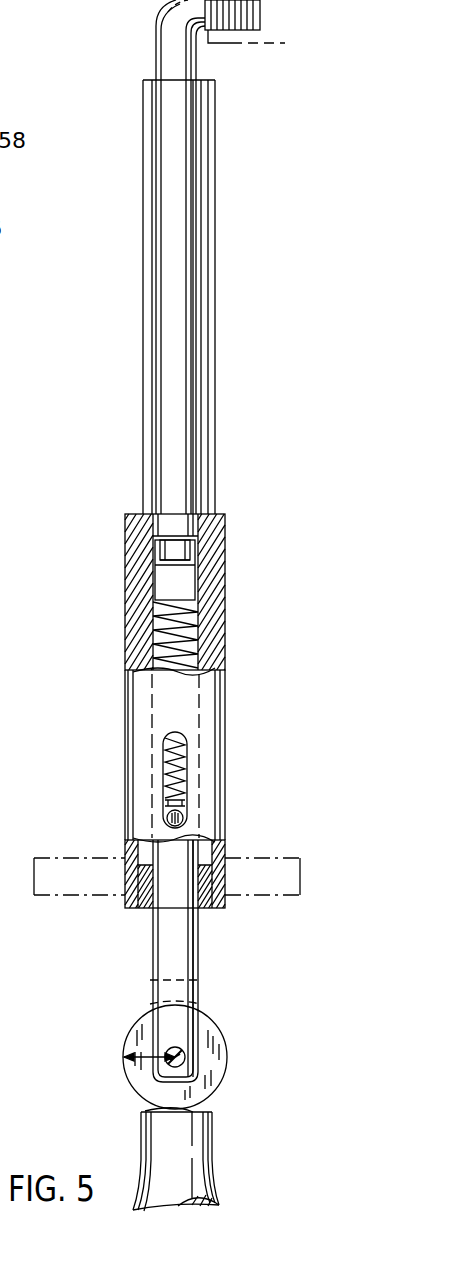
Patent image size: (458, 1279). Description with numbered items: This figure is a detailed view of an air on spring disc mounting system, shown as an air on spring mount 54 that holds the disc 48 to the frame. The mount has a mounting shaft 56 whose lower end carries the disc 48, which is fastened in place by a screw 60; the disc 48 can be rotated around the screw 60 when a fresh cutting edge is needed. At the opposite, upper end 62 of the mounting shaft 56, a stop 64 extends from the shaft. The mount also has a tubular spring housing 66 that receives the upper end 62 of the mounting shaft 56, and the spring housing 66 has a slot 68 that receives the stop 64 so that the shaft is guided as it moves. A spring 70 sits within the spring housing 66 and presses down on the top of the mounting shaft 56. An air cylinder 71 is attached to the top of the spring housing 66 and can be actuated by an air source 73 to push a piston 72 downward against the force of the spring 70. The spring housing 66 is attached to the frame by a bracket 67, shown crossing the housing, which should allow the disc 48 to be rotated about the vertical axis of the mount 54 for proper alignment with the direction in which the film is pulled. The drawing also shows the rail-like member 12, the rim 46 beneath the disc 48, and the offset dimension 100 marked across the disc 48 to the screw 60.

The rail 12 is at (204, 1178).
The rim 46 is at (193, 1112).
The disc 48 is at (213, 1069).
The air on spring mount 54 is at (118, 529).
The mounting shaft 56 is at (195, 959).
The screw 60 is at (182, 1050).
The upper end 62 is at (184, 808).
The stop 64 is at (186, 827).
The tubular spring housing 66 is at (222, 737).
The bracket 67 is at (278, 873).
The slot 68 is at (160, 749).
The spring 70 is at (175, 656).
The air cylinder 71 is at (188, 382).
The piston 72 is at (184, 581).
The air source 73 is at (297, 0).
The offset distance 100 is at (137, 1085).